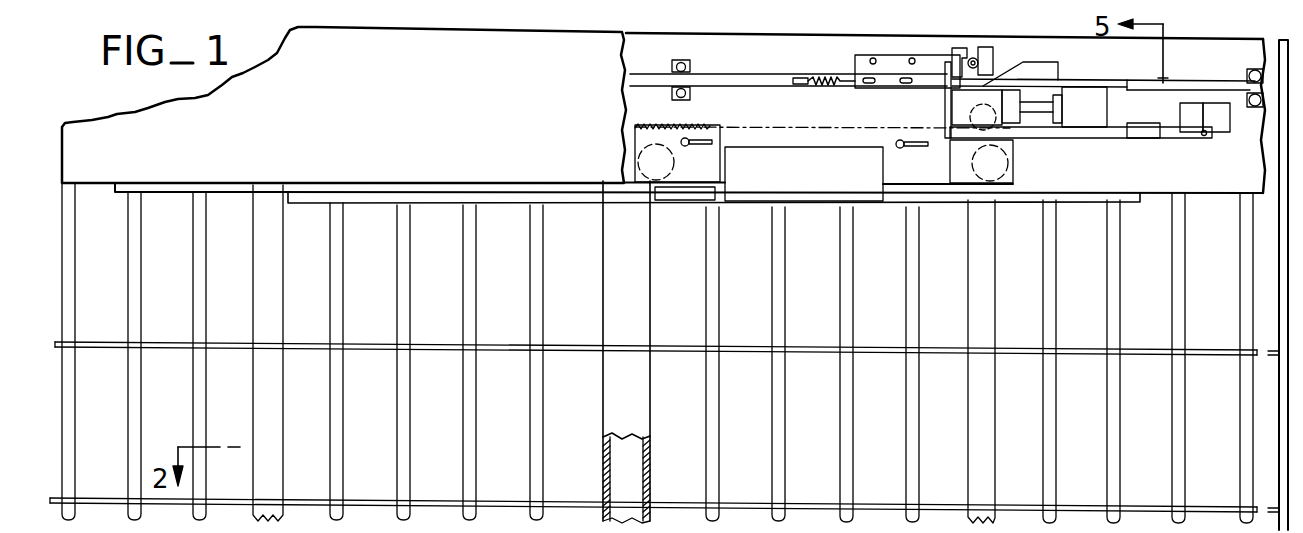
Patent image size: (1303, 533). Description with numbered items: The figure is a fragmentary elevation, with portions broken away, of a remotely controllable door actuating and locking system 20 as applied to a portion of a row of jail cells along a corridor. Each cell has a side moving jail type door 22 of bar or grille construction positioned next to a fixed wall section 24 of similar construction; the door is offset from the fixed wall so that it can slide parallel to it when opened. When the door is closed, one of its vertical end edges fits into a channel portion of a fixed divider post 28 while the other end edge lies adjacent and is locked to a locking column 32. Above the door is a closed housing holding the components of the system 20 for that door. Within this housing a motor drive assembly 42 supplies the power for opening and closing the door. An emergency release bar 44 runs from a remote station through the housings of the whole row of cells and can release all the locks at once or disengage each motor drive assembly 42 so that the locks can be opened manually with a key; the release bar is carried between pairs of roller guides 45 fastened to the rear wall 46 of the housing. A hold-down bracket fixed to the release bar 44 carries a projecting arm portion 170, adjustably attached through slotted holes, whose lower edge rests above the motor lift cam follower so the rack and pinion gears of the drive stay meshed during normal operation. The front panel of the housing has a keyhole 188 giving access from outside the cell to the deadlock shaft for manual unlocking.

The door actuating and locking system 20 is at (1052, 159).
The side moving jail type door 22 is at (465, 414).
The fixed wall section 24 is at (128, 410).
The fixed divider post 28 is at (645, 380).
The locking column 32 is at (258, 392).
The motor drive assembly 42 is at (1169, 150).
The emergency release bar 44 is at (750, 82).
The roller guides 45 is at (684, 93).
The rear wall 46 is at (853, 117).
The projecting arm portion 170 is at (940, 62).
The keyhole 188 is at (292, 120).